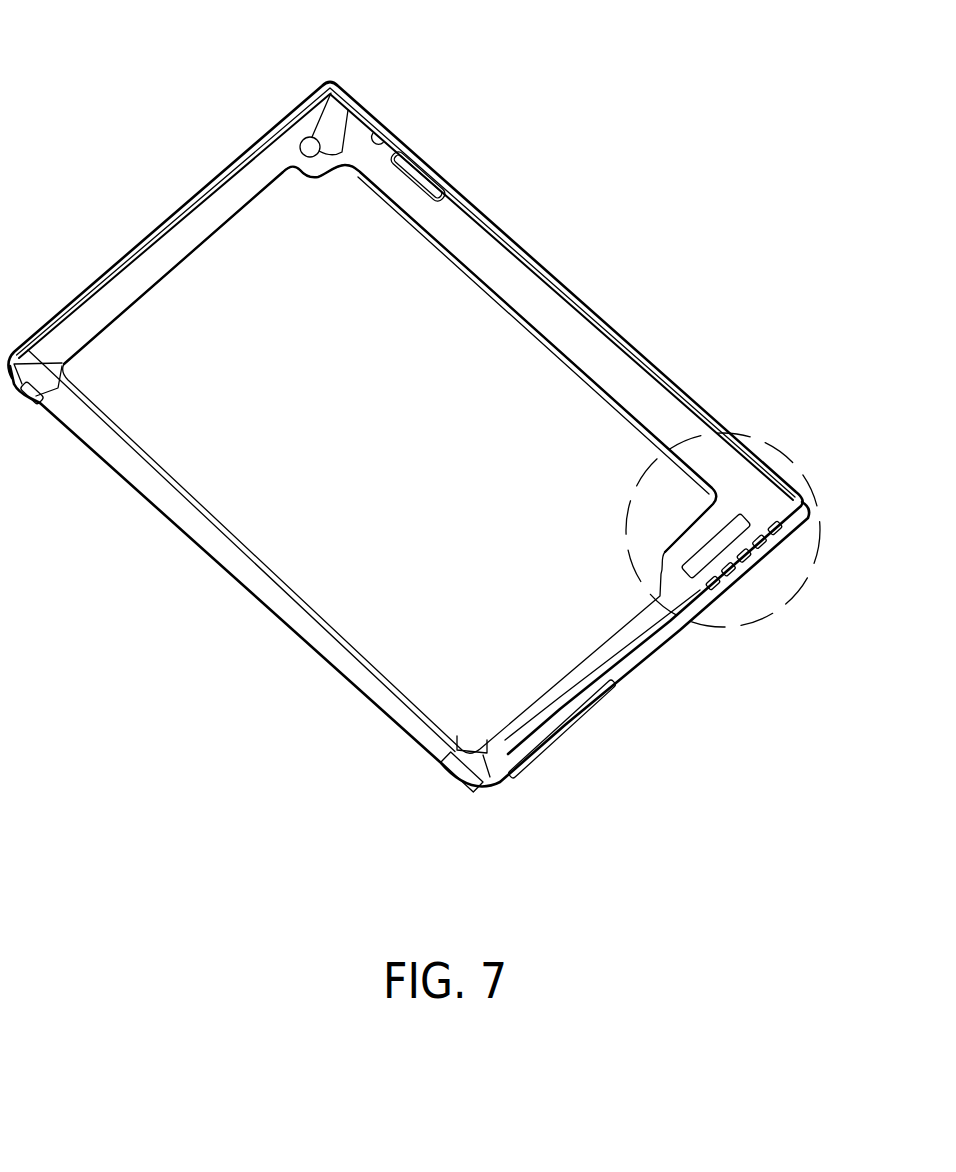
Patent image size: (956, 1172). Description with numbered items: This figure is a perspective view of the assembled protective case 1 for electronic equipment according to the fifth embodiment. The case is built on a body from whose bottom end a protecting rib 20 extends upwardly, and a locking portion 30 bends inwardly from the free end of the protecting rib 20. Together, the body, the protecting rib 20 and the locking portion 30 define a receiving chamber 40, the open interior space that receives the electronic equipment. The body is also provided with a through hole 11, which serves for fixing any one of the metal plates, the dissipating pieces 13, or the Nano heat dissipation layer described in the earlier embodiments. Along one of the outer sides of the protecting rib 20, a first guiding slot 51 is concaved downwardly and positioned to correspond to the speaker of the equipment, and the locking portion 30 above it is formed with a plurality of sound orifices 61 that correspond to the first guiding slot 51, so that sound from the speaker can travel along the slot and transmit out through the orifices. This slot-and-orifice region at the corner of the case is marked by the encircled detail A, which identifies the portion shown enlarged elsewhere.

The protective case 1 is at (58, 47).
The through hole 11 is at (138, 463).
The dissipating pieces 13 is at (400, 595).
The protecting rib 20 is at (605, 362).
The locking portion 30 is at (422, 163).
The receiving chamber 40 is at (390, 459).
The first guiding slot 51 is at (703, 567).
The sound orifices 61 is at (762, 553).
The enlarged portion A is at (790, 458).